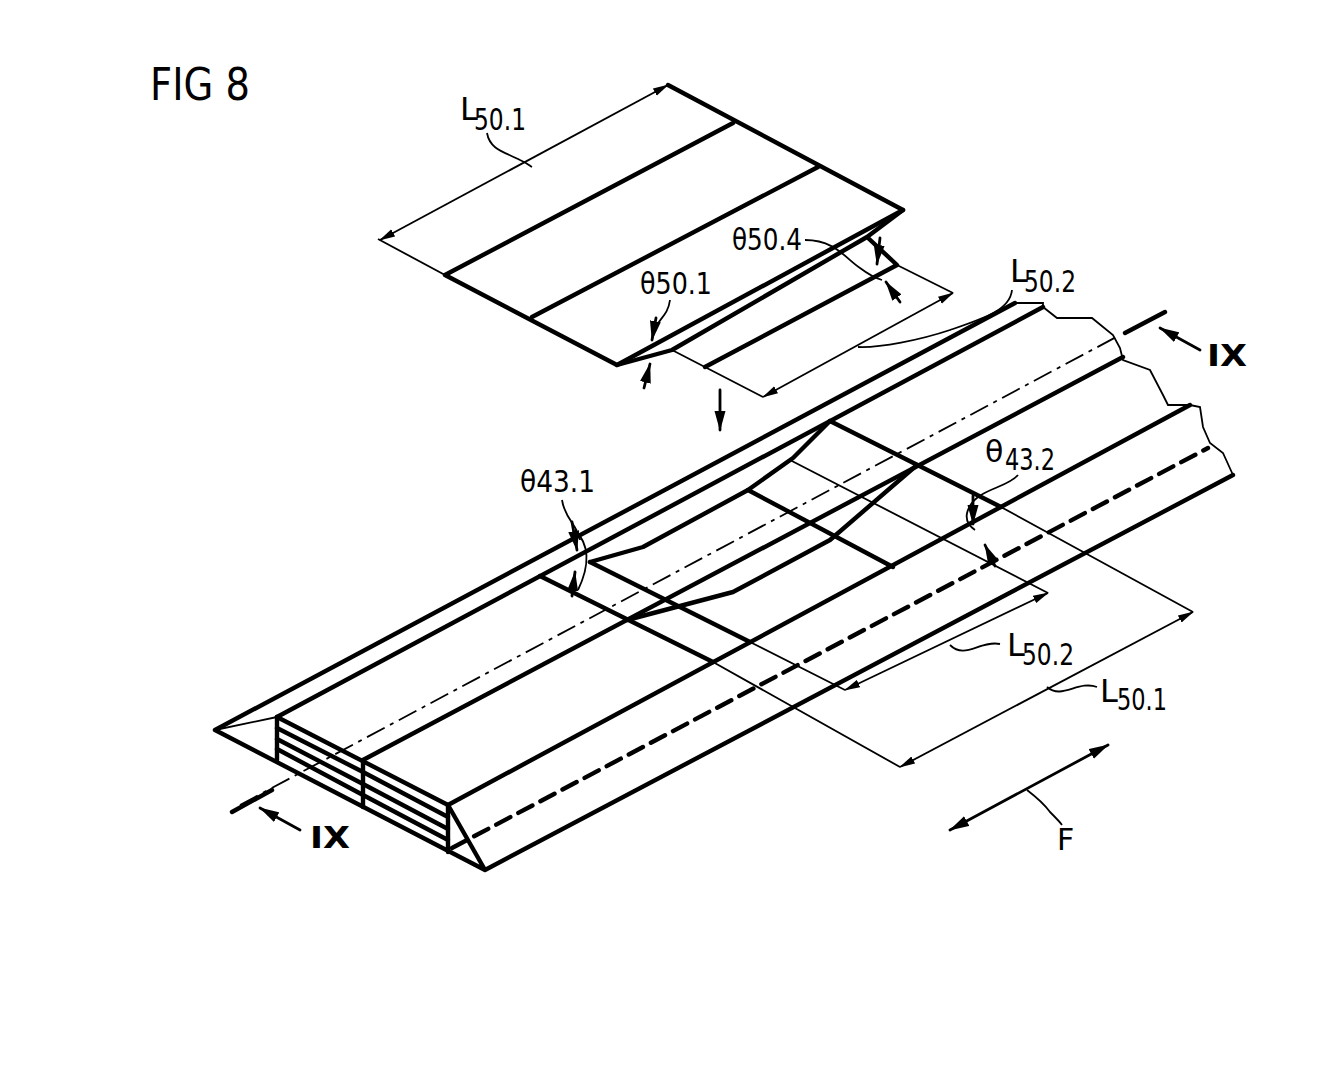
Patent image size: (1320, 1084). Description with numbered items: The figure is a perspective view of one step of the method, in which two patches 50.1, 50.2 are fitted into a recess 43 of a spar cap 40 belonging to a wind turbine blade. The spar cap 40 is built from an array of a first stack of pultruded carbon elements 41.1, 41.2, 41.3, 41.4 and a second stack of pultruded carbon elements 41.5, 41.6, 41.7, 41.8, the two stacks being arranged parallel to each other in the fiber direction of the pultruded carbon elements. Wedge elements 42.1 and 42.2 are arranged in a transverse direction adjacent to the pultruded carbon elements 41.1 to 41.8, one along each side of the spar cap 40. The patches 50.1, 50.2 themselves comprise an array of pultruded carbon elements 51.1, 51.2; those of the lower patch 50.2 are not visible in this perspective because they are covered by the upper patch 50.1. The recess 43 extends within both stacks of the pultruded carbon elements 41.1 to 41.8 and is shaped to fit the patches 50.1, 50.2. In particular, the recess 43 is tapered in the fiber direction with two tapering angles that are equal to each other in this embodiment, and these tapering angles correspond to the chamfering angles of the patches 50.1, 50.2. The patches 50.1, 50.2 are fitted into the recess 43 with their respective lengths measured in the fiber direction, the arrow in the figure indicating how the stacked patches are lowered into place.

The spar cap 40 is at (436, 655).
The pultruded carbon element 41.1 is at (383, 688).
The pultruded carbon element 41.2 is at (267, 719).
The pultruded carbon element 41.3 is at (272, 742).
The pultruded carbon element 41.4 is at (284, 772).
The pultruded carbon element 41.5 is at (630, 685).
The pultruded carbon element 41.6 is at (391, 797).
The pultruded carbon element 41.7 is at (423, 825).
The pultruded carbon element 41.8 is at (430, 847).
The wedge element 42.1 is at (320, 684).
The wedge element 42.2 is at (600, 790).
The recess 43 is at (670, 506).
The patch 50.1 is at (478, 248).
The patch 50.2 is at (690, 373).
The pultruded carbon element 51.1 is at (755, 147).
The pultruded carbon element 51.2 is at (852, 198).